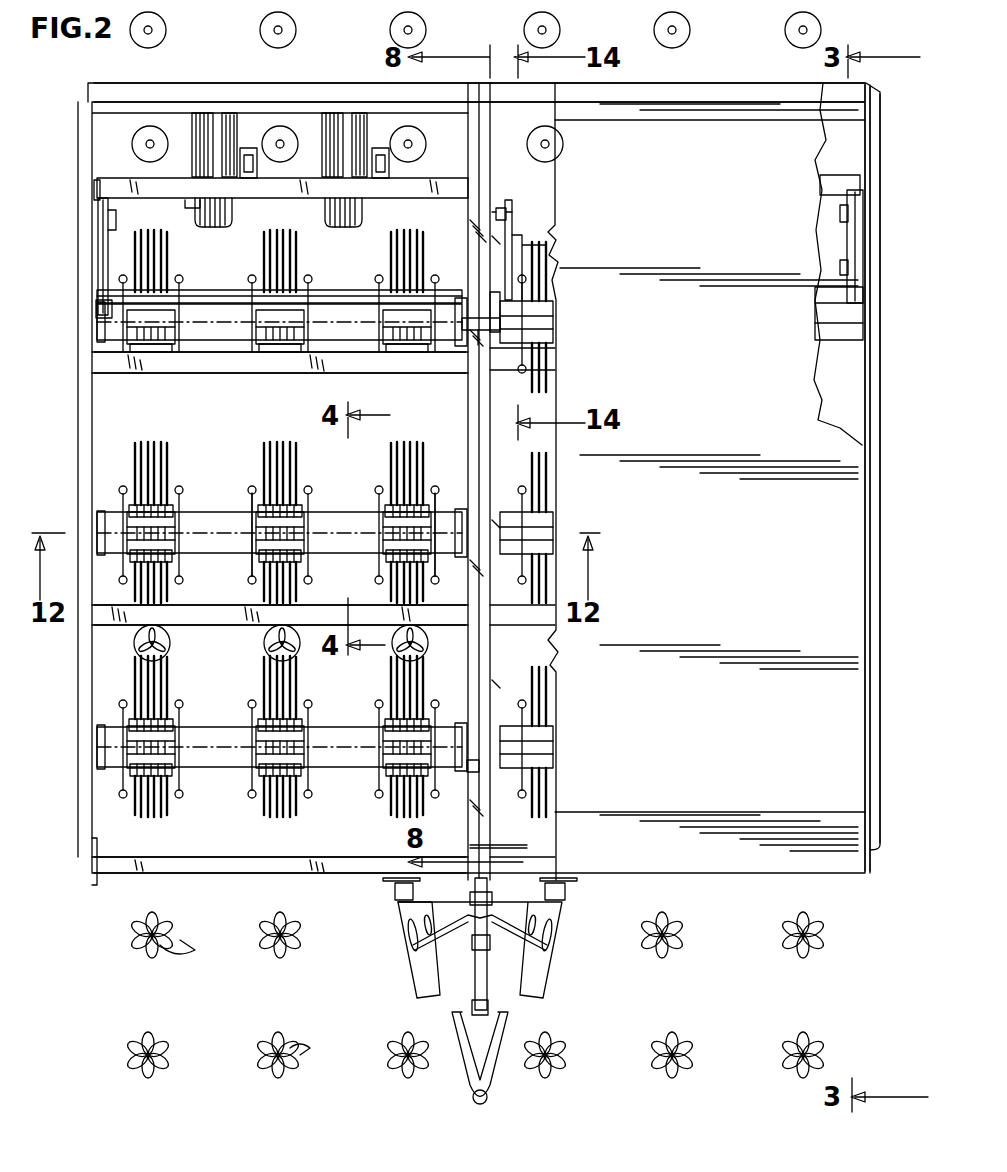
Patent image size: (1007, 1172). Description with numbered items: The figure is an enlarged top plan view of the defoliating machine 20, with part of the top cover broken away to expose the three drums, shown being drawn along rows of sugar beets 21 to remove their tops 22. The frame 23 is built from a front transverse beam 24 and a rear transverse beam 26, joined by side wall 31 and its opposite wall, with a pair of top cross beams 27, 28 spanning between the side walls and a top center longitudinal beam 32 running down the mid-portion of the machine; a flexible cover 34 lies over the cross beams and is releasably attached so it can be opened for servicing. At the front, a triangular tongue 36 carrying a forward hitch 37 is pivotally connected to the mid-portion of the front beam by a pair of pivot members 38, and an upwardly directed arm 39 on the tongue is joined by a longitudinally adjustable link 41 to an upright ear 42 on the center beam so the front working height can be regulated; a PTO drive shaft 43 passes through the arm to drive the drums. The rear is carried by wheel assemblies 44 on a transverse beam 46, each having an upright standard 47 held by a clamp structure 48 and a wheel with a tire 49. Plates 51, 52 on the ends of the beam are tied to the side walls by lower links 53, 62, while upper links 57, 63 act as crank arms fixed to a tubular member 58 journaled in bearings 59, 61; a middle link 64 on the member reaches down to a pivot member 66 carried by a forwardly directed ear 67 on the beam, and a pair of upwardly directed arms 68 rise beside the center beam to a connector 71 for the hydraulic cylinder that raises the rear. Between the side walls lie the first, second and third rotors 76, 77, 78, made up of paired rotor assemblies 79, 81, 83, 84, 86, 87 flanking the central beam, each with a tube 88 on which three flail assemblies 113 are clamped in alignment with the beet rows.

The machine 20 is at (885, 133).
The sugar beets 21 is at (166, 24).
The tops 22 is at (170, 946).
The frame 23 is at (105, 888).
The front transverse beam 24 is at (228, 860).
The rear transverse beam 26 is at (330, 88).
The top cross beam 27 is at (238, 612).
The top cross beam 28 is at (232, 366).
The side wall 31 is at (878, 354).
The top center longitudinal beam 32 is at (470, 424).
The flexible cover 34 is at (845, 495).
The triangular tongue 36 is at (418, 988).
The forward hitch 37 is at (490, 1096).
The pivot members 38 is at (395, 890).
The upwardly directed arm 39 is at (508, 945).
The longitudinally adjustable link 41 is at (500, 844).
The upright ear 42 is at (560, 767).
The PTO drive shaft 43 is at (475, 957).
The wheel assemblies 44 is at (210, 130).
The transverse member or beam 46 is at (441, 180).
The upright standard 47 is at (250, 150).
The clamp structure 48 is at (272, 204).
The tire 49 is at (195, 208).
The plate 51 is at (94, 187).
The plate 52 is at (862, 180).
The lower link 53 is at (98, 249).
The upper link 57 is at (108, 244).
The shaft or tubular member 58 is at (203, 290).
The bearing 59 is at (96, 311).
The bearing 61 is at (865, 311).
The lower link 62 is at (862, 234).
The upper link 63 is at (858, 261).
The middle link 64 is at (548, 244).
The pivot member 66 is at (520, 214).
The forwardly directed ear 67 is at (512, 204).
The upwardly directed arms 68 is at (462, 280).
The connector 71 is at (475, 350).
The first rotor 76 is at (340, 720).
The second rotor 77 is at (210, 510).
The third rotor 78 is at (350, 290).
The rotor assembly 79 is at (340, 775).
The rotor assembly 81 is at (555, 729).
The rotor assembly 83 is at (348, 510).
The rotor assembly 84 is at (550, 514).
The rotor assembly 86 is at (350, 340).
The rotor assembly 87 is at (560, 327).
The tube 88 is at (232, 555).
The flail assemblies 113 is at (262, 460).